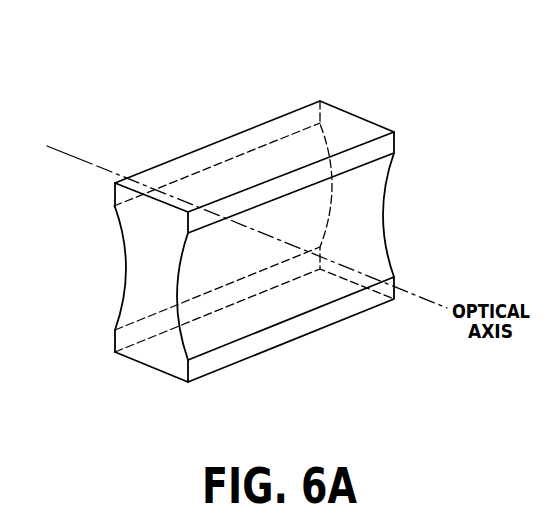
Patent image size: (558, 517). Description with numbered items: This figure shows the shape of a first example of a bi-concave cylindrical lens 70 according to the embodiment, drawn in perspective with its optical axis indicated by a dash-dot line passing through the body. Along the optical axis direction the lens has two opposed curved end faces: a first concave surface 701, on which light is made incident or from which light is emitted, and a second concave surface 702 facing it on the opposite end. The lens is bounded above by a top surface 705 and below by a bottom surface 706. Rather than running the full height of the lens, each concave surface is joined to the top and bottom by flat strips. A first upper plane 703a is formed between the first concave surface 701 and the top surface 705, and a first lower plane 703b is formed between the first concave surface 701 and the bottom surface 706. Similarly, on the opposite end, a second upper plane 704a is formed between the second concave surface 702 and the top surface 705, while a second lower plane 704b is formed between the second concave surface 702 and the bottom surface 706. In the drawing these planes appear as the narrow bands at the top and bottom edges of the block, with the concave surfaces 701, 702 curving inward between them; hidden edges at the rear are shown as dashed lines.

The cylindrical lens 70 is at (240, 85).
The first concave surface 701 is at (125, 260).
The second concave surface 702 is at (365, 222).
The first upper plane 703a is at (153, 171).
The first lower plane 703b is at (113, 338).
The second upper plane 704a is at (388, 142).
The second lower plane 704b is at (311, 320).
The top surface 705 is at (345, 124).
The bottom surface 706 is at (150, 368).